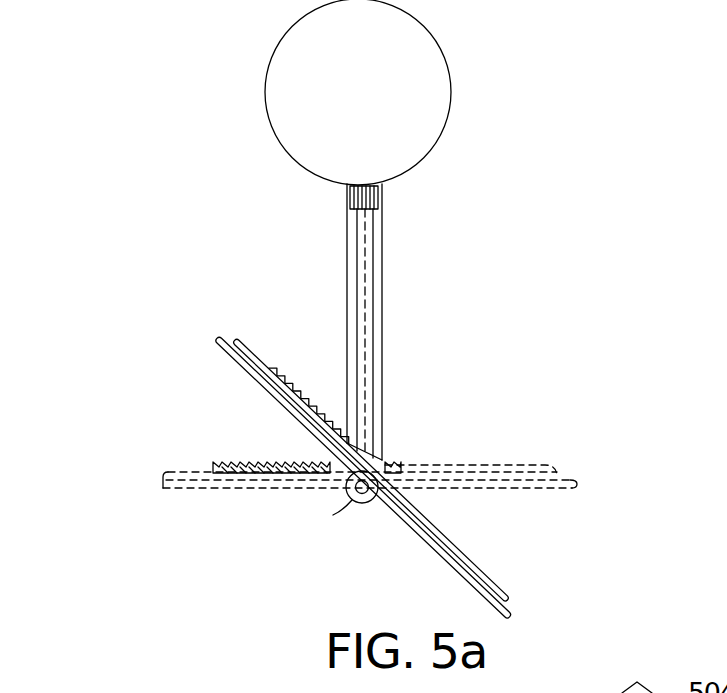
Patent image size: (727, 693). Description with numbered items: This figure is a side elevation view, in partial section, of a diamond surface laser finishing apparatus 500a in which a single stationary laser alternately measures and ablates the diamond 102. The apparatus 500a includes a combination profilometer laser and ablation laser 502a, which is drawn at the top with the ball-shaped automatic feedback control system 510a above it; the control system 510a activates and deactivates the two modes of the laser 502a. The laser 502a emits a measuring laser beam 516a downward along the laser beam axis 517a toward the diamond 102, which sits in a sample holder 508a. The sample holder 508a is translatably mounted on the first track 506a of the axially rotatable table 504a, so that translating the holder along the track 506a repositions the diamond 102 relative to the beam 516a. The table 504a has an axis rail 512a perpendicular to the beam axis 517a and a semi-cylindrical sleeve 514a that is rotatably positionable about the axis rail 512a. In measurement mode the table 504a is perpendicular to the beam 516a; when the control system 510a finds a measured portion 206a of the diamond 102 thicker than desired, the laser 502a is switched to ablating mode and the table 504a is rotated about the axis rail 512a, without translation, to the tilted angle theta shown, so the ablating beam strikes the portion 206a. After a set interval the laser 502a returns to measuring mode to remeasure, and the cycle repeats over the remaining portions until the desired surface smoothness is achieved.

The diamond surface laser finishing apparatus 500a is at (126, 337).
The automatic feedback control system 510a is at (451, 106).
The combination profilometer laser and ablation laser 502a is at (378, 199).
The measuring laser beam 516a is at (383, 309).
The laser beam axis 517a is at (357, 322).
The stem lower end 206a is at (385, 458).
The axially rotatable table 504a is at (520, 489).
The first track 506a is at (556, 462).
The diamond 102 is at (299, 381).
The sample holder 508a is at (272, 381).
The axis rail 512a is at (353, 500).
The semi-cylindrical sleeve 514a is at (371, 503).